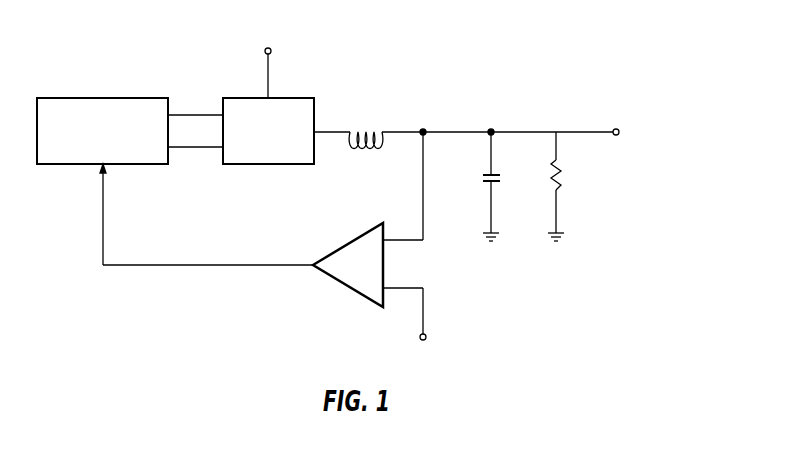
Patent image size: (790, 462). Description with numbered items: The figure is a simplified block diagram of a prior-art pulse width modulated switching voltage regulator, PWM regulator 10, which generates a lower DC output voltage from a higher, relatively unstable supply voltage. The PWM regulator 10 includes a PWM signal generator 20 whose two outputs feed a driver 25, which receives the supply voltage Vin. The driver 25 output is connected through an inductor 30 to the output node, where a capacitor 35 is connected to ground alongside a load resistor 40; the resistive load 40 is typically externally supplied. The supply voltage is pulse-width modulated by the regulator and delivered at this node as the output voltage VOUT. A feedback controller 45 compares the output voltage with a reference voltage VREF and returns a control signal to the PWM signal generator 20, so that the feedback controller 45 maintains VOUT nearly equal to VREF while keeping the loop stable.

The PWM regulator 10 is at (661, 53).
The PWM signal generator 20 is at (107, 97).
The driver 25 is at (249, 97).
The inductor 30 is at (365, 131).
The capacitor 35 is at (498, 181).
The load resistor 40 is at (561, 175).
The feedback controller 45 is at (354, 240).